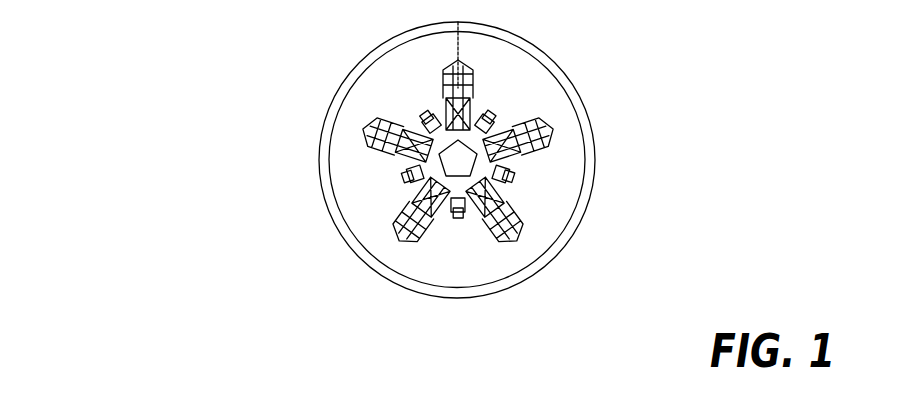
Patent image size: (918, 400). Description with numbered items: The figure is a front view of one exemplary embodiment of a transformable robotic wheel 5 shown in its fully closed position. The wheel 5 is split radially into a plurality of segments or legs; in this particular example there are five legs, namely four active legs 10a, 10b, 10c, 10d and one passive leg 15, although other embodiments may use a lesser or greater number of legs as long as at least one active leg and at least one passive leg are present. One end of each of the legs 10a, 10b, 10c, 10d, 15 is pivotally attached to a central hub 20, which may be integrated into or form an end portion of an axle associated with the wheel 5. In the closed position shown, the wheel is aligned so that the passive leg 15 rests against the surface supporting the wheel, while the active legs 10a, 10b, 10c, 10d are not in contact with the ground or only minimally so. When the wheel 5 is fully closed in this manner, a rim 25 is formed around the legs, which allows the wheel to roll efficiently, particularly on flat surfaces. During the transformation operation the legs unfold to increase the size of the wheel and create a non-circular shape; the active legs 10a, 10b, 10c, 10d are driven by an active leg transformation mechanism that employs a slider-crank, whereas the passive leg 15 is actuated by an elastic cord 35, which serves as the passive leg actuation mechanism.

The transformable robotic wheel 5 is at (128, 42).
The active leg 10a is at (354, 191).
The active leg 10b is at (397, 87).
The active leg 10c is at (520, 88).
The active leg 10d is at (552, 200).
The passive leg 15 is at (455, 260).
The central hub 20 is at (455, 159).
The rim 25 is at (405, 290).
The elastic cord 35 is at (400, 233).